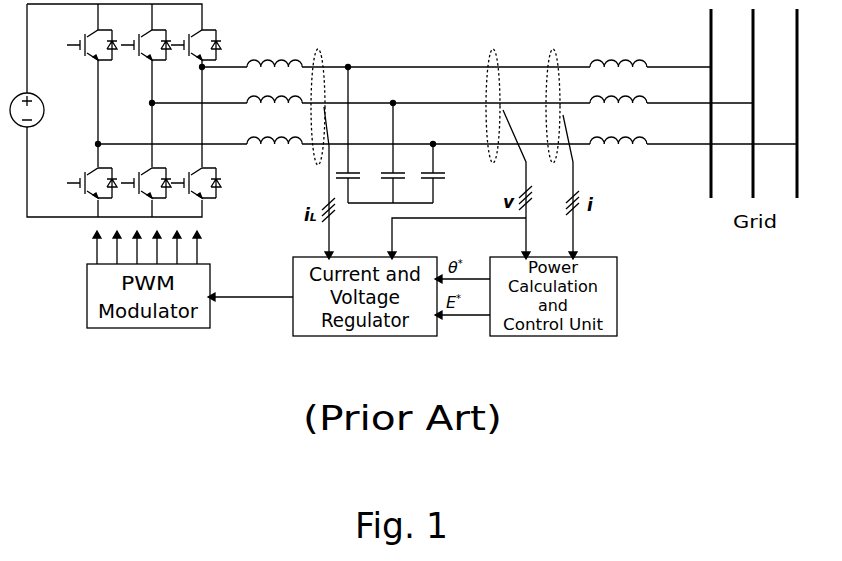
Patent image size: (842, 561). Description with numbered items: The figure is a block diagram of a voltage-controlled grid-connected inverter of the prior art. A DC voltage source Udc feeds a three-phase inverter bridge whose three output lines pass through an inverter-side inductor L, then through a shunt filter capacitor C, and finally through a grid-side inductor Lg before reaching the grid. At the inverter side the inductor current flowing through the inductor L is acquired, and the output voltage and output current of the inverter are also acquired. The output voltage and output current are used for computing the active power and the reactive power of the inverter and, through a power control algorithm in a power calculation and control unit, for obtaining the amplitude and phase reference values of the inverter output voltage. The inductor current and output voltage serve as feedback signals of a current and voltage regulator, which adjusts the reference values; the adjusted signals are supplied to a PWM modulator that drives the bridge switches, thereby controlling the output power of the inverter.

The DC voltage source Udc is at (37, 99).
The converter-side filter inductor L is at (274, 89).
The grid-side filter inductor Lg is at (618, 91).
The filter capacitor C is at (400, 134).